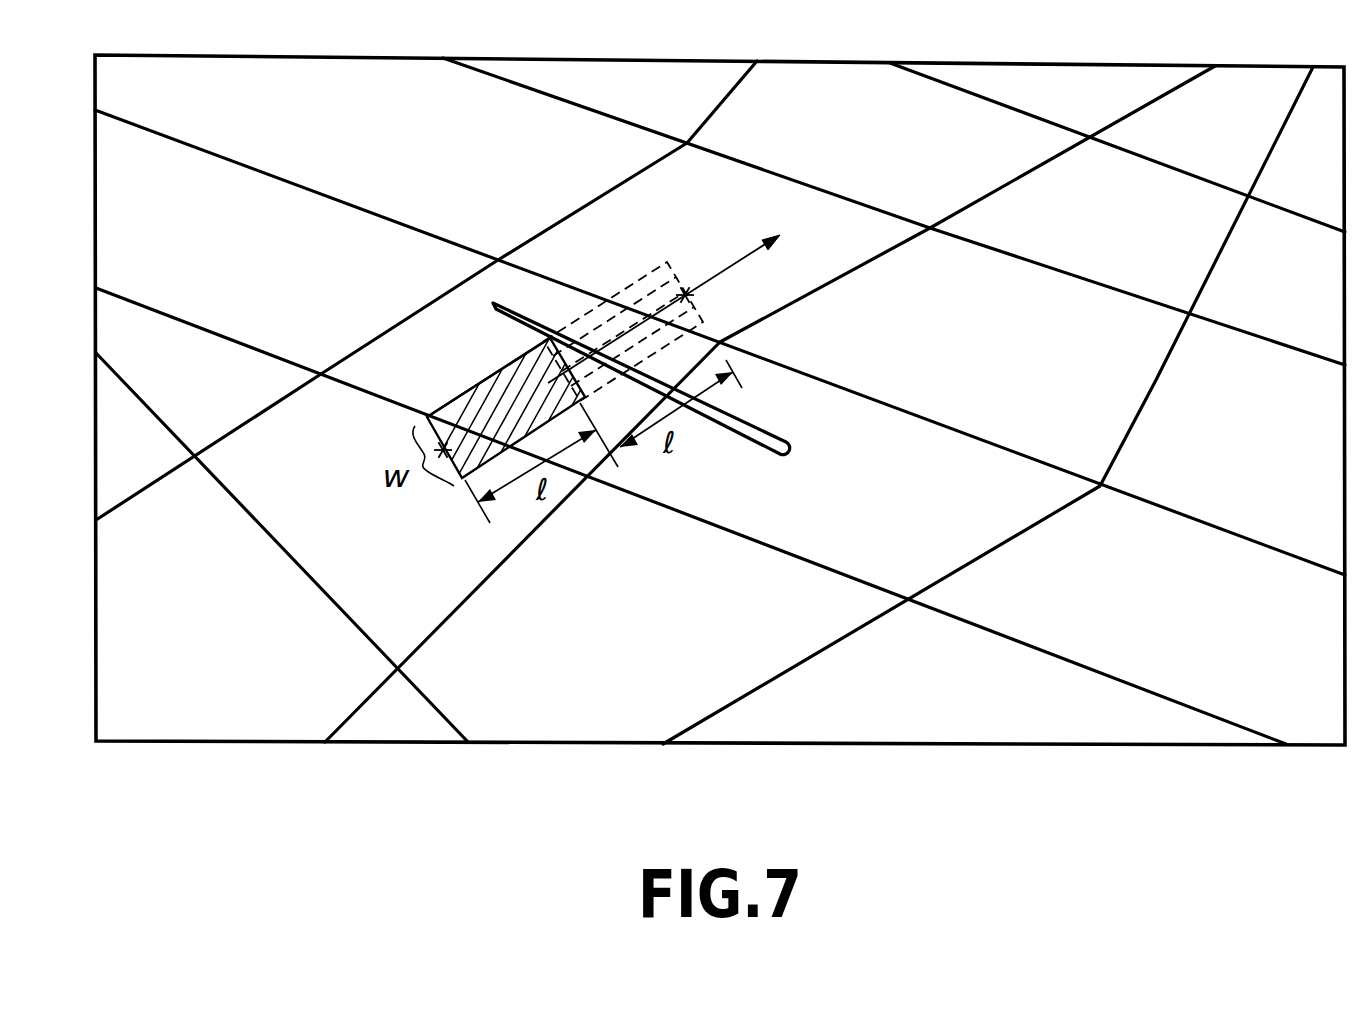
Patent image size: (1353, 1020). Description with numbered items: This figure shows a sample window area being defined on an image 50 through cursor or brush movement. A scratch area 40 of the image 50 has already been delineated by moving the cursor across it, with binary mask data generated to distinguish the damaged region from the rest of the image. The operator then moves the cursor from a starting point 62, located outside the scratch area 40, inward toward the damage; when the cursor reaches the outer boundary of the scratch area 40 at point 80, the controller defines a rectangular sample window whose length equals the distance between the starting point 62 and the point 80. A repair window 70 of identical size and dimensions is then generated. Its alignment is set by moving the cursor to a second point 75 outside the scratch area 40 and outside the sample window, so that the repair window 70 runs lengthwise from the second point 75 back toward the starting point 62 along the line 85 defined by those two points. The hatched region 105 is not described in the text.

The scratch area 40 is at (790, 437).
The image 50 is at (1269, 748).
The starting point 62 is at (443, 453).
The repair window 70 is at (603, 302).
The second point 75 is at (697, 294).
The point on outer boundary of scratch area 80 is at (552, 338).
The line 85 is at (690, 298).
The sensing region 105 is at (460, 396).